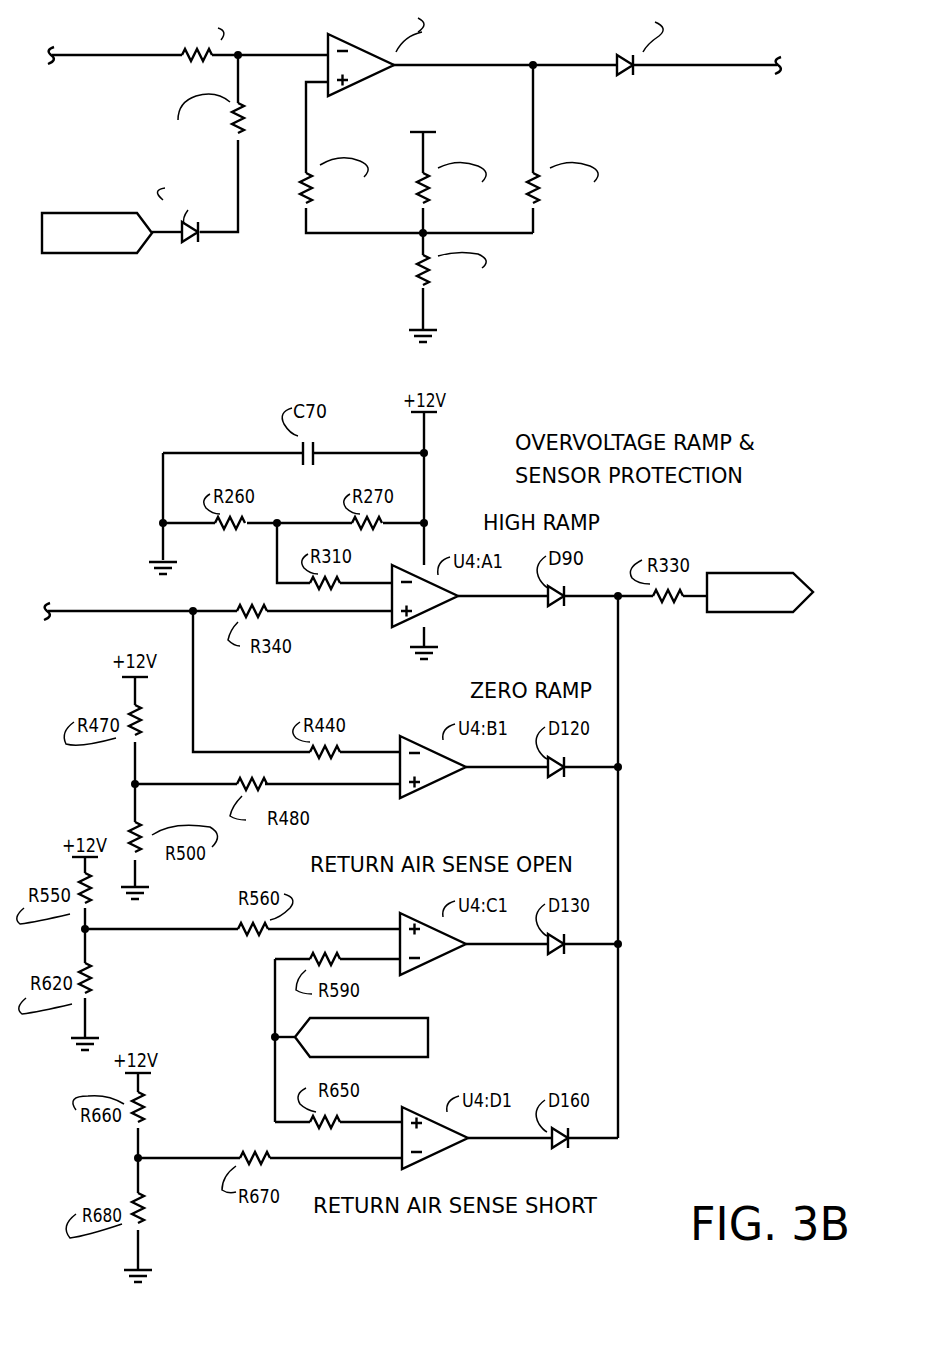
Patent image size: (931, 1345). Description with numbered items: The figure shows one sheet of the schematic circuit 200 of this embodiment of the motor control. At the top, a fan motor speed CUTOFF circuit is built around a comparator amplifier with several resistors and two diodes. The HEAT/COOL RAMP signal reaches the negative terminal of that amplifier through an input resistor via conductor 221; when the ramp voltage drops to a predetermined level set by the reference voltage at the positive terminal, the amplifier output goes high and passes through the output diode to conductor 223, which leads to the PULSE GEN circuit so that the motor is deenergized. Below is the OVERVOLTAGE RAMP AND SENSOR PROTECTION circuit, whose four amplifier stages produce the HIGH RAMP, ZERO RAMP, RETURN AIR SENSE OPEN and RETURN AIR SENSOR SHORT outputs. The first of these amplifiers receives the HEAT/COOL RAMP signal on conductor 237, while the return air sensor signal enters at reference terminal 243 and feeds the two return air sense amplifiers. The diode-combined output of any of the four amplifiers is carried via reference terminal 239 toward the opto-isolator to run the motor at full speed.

The control circuit 200 is at (412, 176).
The conductor 221 is at (122, 57).
The conductor 223 is at (747, 57).
The conductor 237 is at (95, 610).
The reference terminal 239 is at (745, 612).
The reference terminal 243 is at (416, 1018).